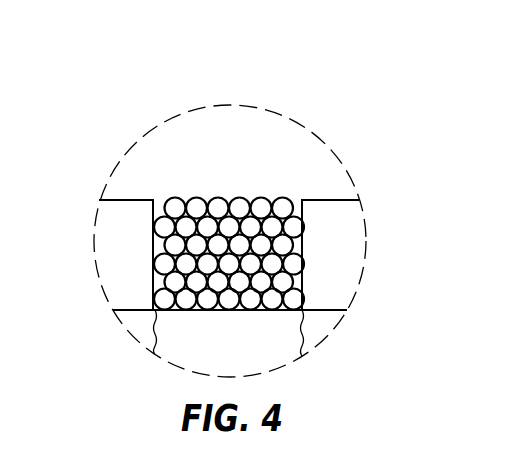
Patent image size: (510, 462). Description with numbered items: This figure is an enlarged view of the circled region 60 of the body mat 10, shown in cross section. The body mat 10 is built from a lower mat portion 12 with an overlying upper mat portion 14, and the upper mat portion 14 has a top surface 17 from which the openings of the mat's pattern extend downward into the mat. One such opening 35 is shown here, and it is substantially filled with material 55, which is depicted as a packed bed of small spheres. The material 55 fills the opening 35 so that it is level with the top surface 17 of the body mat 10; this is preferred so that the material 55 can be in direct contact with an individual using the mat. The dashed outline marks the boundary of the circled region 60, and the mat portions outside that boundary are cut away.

The body mat 10 is at (133, 68).
The lower mat portion 12 is at (245, 352).
The upper mat portion 14 is at (126, 263).
The top surface 17 is at (130, 198).
The opening 35 is at (290, 163).
The material 55 is at (213, 196).
The circled region 60 is at (358, 177).